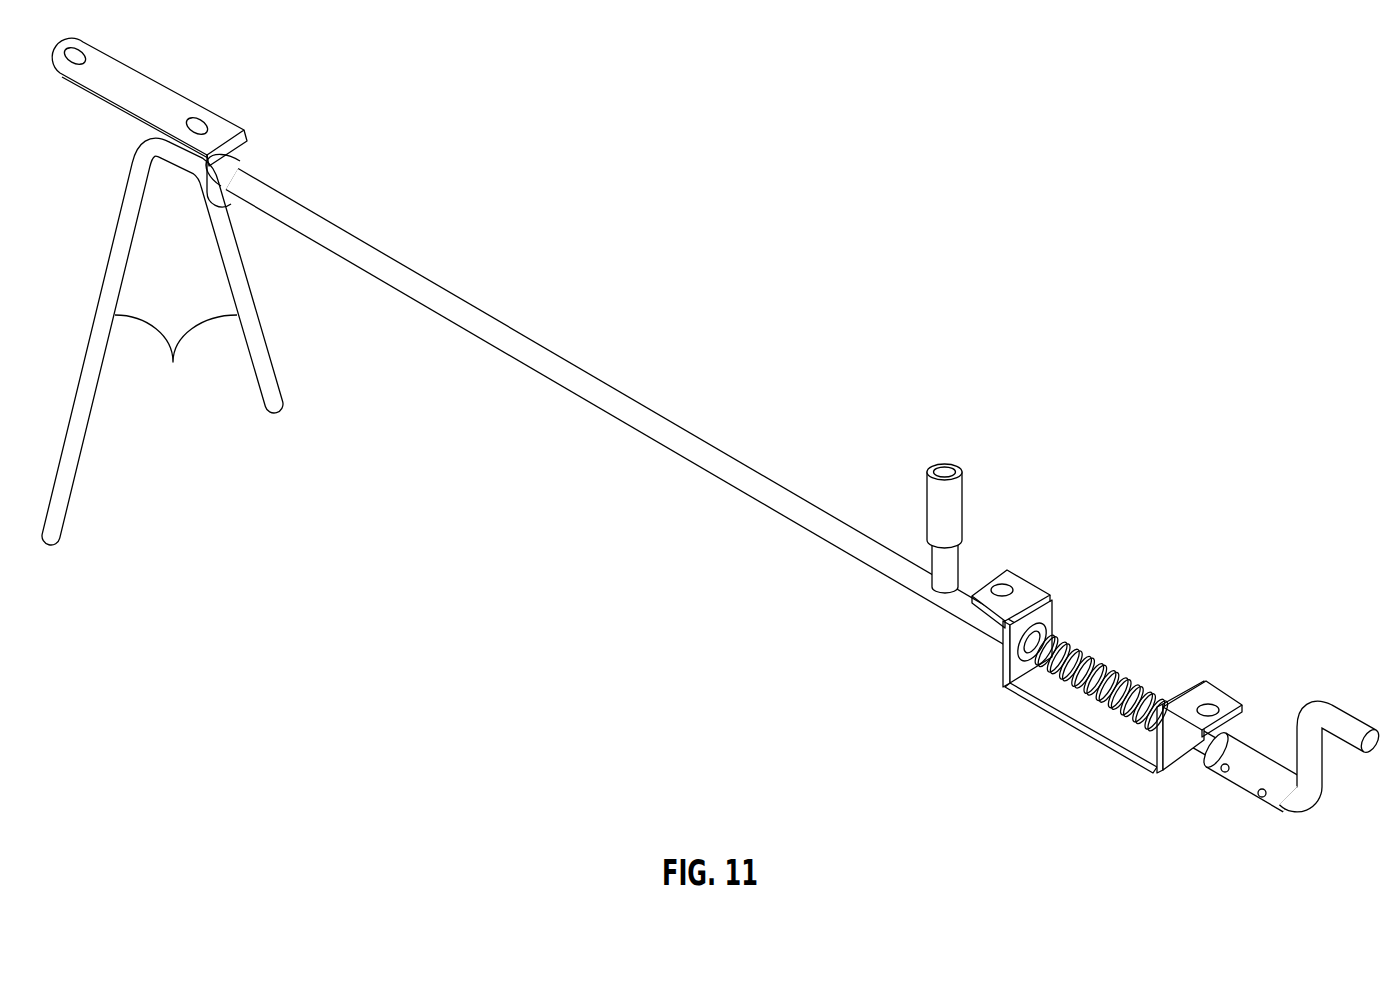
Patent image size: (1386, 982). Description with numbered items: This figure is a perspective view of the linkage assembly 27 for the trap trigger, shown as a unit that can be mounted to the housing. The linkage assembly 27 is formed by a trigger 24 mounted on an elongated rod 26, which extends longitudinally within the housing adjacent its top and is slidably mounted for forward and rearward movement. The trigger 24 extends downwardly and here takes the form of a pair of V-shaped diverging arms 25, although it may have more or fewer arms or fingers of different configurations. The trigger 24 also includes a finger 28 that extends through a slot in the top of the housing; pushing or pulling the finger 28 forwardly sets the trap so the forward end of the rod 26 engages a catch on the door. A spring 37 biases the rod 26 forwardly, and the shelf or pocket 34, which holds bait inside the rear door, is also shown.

The trigger 24 is at (80, 412).
The diverging arms 25 is at (176, 358).
The elongated rod 26 is at (607, 399).
The linkage assembly 27 is at (655, 324).
The finger 28 is at (943, 472).
The shelf or pocket 34 is at (1072, 707).
The spring 37 is at (1083, 643).